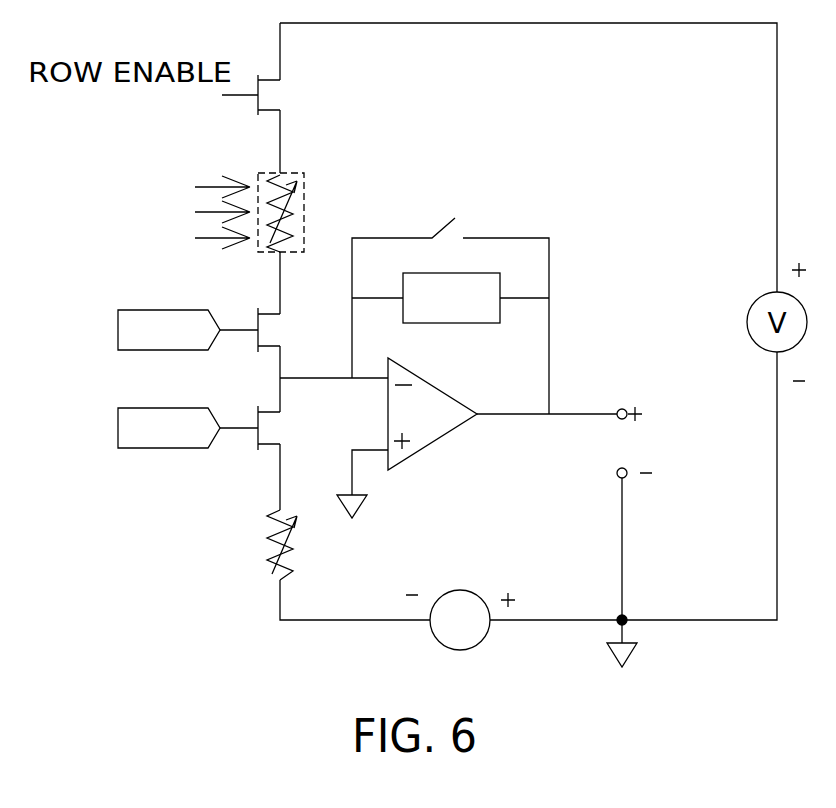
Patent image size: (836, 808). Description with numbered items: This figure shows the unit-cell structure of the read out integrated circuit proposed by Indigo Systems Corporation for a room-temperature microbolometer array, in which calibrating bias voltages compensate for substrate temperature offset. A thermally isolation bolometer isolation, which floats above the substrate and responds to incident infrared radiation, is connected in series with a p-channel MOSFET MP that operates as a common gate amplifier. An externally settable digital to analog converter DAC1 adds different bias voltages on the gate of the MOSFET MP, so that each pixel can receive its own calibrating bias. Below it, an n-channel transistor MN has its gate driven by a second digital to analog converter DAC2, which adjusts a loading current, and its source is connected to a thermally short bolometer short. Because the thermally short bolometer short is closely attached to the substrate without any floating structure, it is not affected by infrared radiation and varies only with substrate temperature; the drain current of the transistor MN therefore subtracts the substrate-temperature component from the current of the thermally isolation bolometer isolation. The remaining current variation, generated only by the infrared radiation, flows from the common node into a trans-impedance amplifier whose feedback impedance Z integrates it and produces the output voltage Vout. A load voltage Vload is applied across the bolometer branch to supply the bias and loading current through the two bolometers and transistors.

The p-channel MOSFET MP is at (274, 330).
The n-channel transistor MN is at (276, 428).
The digital to analog converter DAC1 is at (169, 330).
The digital to analog converter DAC2 is at (169, 428).
The trans-impedance amplifier feedback impedance Z is at (450, 298).
The output voltage Vout is at (599, 413).
The load voltage Vload is at (487, 629).
The thermally isolation bolometer isolation is at (324, 169).
The thermally short bolometer short is at (164, 545).